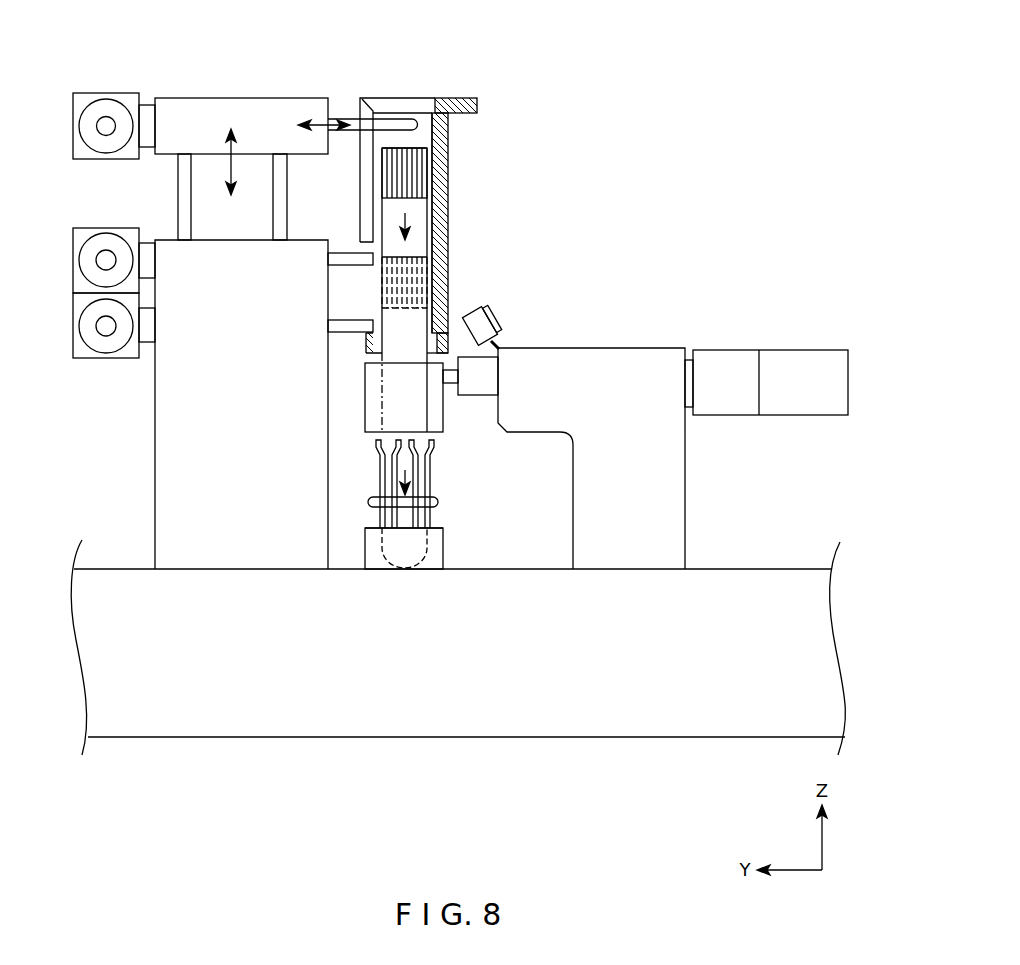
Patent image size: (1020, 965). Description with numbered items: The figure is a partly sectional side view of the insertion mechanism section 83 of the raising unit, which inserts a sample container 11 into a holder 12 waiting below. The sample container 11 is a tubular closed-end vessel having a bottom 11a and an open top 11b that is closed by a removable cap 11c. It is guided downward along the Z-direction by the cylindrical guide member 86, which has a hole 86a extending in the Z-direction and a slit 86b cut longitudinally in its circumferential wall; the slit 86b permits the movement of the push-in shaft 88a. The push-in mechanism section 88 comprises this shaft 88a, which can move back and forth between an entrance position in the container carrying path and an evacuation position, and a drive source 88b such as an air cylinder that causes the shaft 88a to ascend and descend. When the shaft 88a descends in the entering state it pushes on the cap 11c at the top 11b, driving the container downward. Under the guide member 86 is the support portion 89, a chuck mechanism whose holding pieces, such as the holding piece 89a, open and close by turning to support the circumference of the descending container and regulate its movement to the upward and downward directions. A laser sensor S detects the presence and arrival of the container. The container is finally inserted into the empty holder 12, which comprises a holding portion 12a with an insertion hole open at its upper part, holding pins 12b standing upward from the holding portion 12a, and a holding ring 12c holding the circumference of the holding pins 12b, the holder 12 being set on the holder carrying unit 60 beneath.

The push-in mechanism section 88 is at (296, 98).
The shaft 88a is at (403, 113).
The drive source 88b is at (155, 450).
The insertion mechanism section 83 is at (428, 191).
The guide member 86 is at (448, 202).
The hole 86a is at (432, 230).
The slit 86b is at (372, 195).
The sample container 11 is at (405, 180).
The bottom 11a is at (395, 455).
The top 11b is at (405, 147).
The cap 11c is at (427, 160).
The laser sensor S is at (500, 314).
The support portion 89 is at (613, 348).
The holding piece 89a is at (445, 405).
The holder 12 is at (437, 504).
The holding portion 12a is at (443, 536).
The holding pins 12b is at (432, 470).
The holding ring 12c is at (438, 502).
The holder carrying unit 60 is at (490, 737).